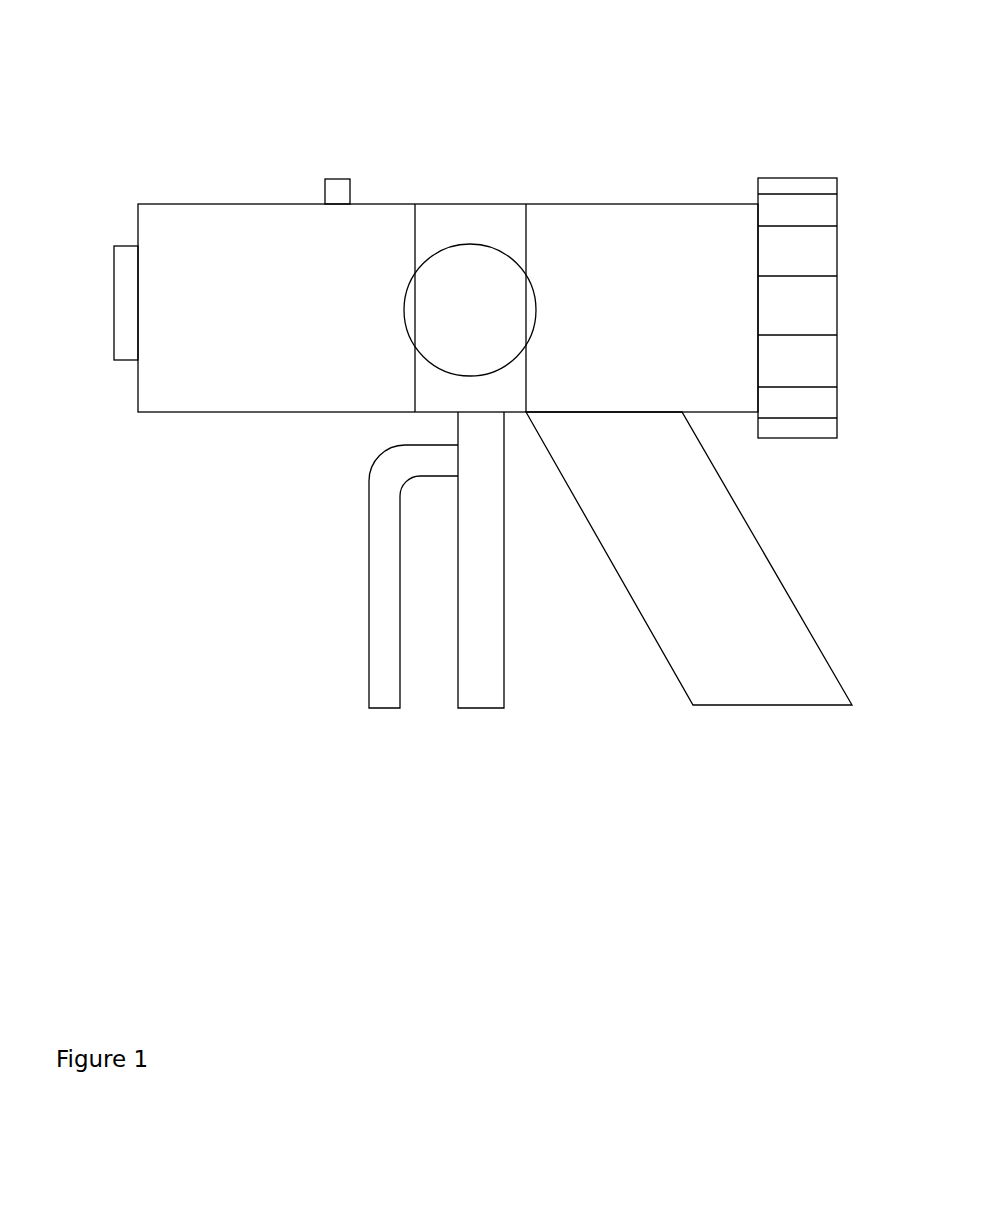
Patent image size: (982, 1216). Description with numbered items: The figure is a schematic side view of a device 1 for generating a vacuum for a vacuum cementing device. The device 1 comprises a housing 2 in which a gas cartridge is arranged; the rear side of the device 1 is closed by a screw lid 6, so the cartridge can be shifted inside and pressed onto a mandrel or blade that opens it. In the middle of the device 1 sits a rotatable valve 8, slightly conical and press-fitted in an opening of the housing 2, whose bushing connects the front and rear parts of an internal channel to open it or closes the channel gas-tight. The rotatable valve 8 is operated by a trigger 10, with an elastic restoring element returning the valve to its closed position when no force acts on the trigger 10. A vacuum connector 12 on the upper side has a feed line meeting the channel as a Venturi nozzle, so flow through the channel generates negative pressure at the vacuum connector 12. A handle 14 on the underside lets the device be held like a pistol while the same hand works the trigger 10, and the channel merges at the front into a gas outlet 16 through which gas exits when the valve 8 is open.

The device 1 is at (221, 77).
The housing 2 is at (658, 270).
The screw lid 6 is at (805, 215).
The rotatable valve 8 is at (467, 307).
The trigger 10 is at (482, 602).
The vacuum connector 12 is at (338, 192).
The handle 14 is at (662, 562).
The gas outlet 16 is at (127, 278).